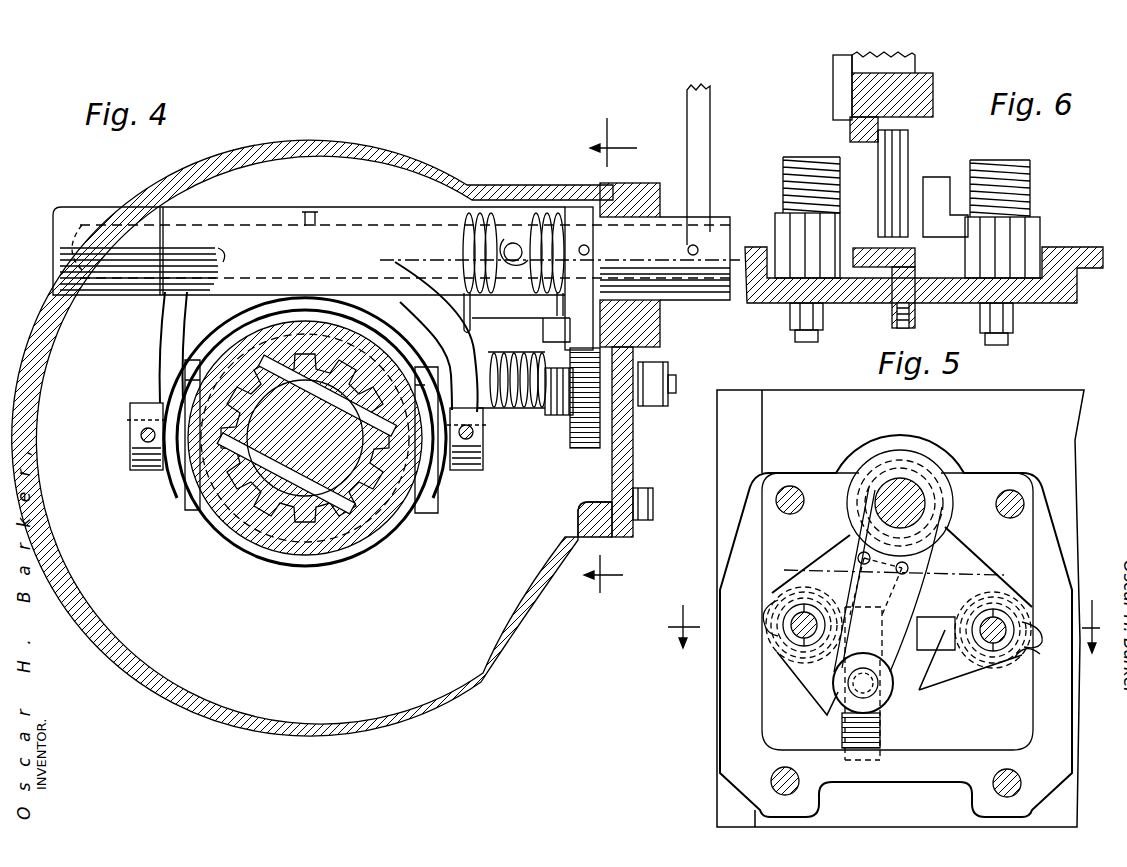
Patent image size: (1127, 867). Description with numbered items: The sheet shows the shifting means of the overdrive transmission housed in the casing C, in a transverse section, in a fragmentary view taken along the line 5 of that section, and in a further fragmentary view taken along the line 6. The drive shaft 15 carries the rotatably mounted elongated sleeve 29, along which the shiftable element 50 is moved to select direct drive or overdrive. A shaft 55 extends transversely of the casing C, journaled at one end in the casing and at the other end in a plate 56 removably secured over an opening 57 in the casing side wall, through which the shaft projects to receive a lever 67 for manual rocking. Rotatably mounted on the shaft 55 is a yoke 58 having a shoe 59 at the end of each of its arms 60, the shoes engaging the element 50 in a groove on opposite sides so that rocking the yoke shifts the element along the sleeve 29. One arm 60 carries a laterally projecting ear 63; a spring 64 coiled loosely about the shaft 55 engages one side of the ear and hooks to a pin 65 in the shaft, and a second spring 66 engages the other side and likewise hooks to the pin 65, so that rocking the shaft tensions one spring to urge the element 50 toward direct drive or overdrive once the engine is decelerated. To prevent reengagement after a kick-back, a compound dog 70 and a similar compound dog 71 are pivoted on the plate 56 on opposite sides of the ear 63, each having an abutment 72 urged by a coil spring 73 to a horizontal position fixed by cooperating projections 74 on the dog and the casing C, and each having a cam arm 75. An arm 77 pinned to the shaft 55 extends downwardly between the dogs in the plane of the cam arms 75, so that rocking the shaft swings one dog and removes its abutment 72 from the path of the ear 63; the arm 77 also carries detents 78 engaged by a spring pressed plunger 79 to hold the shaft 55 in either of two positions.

In FIG. 4, the drive shaft 15 is at (290, 497).
In FIG. 4, the elongated sleeve 29 is at (248, 518).
In FIG. 4, the shiftable element 50 is at (352, 552).
In FIG. 4, the shaft 55 is at (630, 240).
In FIG. 5, the shaft 55 is at (890, 488).
In FIG. 4, the plate 56 is at (638, 456).
In FIG. 4, the opening 57 is at (590, 507).
In FIG. 5, the opening 57 is at (940, 742).
In FIG. 4, the yoke 58 is at (357, 243).
In FIG. 4, the shoe 59 is at (440, 498).
In FIG. 5, the shoe 59 is at (842, 730).
In FIG. 4, the arm 60 is at (150, 358).
In FIG. 5, the arm 60 is at (890, 662).
In FIG. 4, the ear 63 is at (526, 320).
In FIG. 6, the ear 63 is at (900, 170).
In FIG. 5, the ear 63 is at (852, 595).
In FIG. 4, the spring 64 is at (482, 213).
In FIG. 4, the pin 65 is at (513, 243).
In FIG. 4, the second spring 66 is at (546, 213).
In FIG. 4, the lever 67 is at (712, 121).
In FIG. 6, the compound dog 70 is at (781, 230).
In FIG. 5, the compound dog 70 is at (765, 668).
In FIG. 6, the compound dog 71 is at (1035, 230).
In FIG. 5, the compound dog 71 is at (1015, 657).
In FIG. 6, the abutment 72 is at (933, 185).
In FIG. 5, the abutment 72 is at (933, 620).
In FIG. 6, the coil spring 73 is at (1027, 193).
In FIG. 5, the coil spring 73 is at (793, 597).
In FIG. 6, the projection 74 is at (785, 258).
In FIG. 5, the projection 74 is at (768, 620).
In FIG. 5, the cam arm 75 is at (963, 673).
In FIG. 4, the arm 77 is at (590, 362).
In FIG. 6, the arm 77 is at (878, 268).
In FIG. 5, the arm 77 is at (930, 548).
In FIG. 5, the detent 78 is at (856, 555).
In FIG. 4, the spring pressed plunger 79 is at (634, 345).
In FIG. 4, the section line 5— 5 is at (610, 355).
In FIG. 5, the section line 6— 6 is at (876, 613).
In FIG. 4, the casing C is at (487, 678).
In FIG. 5, the casing C is at (985, 428).